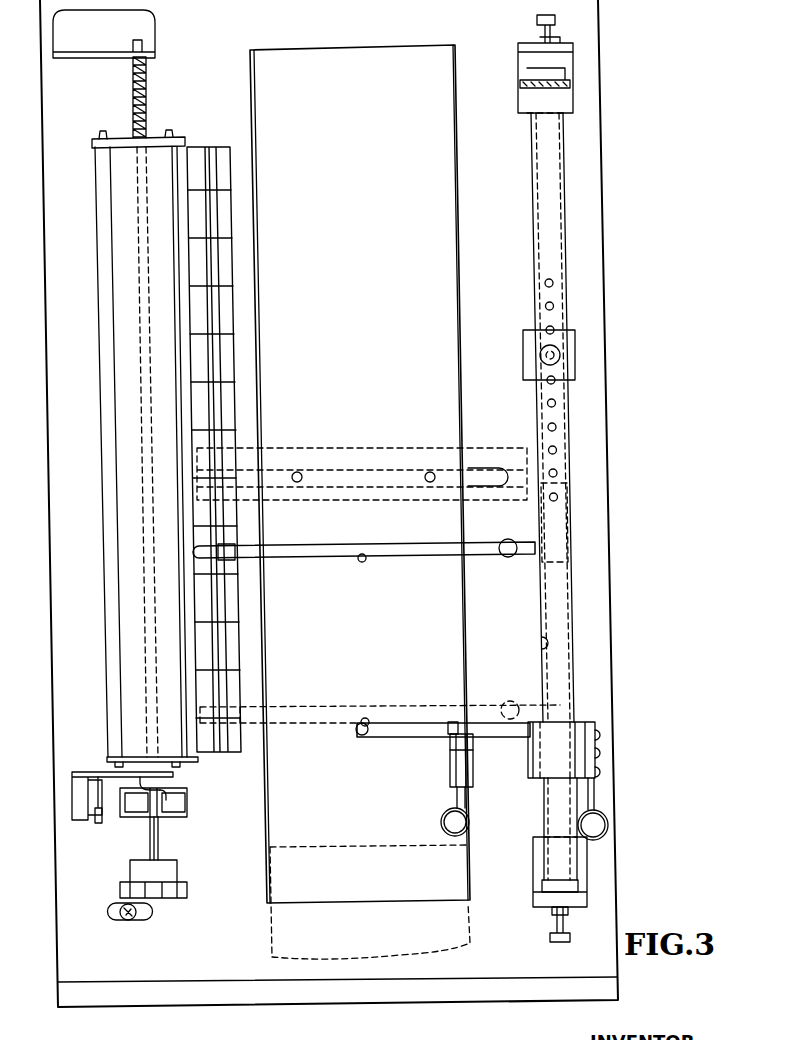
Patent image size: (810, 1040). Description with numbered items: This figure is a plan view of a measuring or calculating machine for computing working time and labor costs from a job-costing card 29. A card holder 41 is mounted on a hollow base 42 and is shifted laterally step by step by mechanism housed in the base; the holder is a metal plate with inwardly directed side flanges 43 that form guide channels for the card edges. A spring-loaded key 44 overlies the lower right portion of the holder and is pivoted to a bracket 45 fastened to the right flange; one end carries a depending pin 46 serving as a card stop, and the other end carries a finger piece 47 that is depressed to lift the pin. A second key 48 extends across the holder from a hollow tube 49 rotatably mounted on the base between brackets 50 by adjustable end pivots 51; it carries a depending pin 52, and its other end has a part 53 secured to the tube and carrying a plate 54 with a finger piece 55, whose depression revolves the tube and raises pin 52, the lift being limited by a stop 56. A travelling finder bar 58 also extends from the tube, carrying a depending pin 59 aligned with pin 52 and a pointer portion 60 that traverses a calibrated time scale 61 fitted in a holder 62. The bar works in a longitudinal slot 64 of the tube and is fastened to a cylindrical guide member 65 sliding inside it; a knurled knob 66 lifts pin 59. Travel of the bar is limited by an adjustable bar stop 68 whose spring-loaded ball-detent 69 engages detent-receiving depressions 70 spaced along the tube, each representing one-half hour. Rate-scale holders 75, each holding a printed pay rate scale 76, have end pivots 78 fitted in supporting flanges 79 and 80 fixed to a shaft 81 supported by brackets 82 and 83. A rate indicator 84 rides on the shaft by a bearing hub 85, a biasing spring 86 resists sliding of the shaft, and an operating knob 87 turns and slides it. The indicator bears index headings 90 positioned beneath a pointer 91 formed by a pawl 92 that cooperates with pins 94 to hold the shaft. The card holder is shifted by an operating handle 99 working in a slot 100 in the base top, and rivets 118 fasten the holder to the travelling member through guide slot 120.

The job-costing card 29 is at (268, 940).
The card holder 41 is at (412, 246).
The hollow base 42 is at (605, 193).
The side flanges 43 is at (258, 333).
The spring-loaded key 44 is at (457, 797).
The bracket 45 is at (468, 755).
The depending pin 46 is at (452, 720).
The finger piece 47 is at (452, 768).
The second key 48 is at (417, 722).
The tube 49 is at (555, 617).
The brackets 50 is at (535, 45).
The end pivots 51 is at (545, 60).
The depending pin 52 is at (358, 733).
The part 53 is at (570, 720).
The plate 54 is at (600, 741).
The finger piece 55 is at (607, 822).
The stop 56 is at (600, 758).
The travelling finder bar 58 is at (428, 542).
The depending pin 59 is at (362, 553).
The pointer portion 60 is at (228, 547).
The time scale 61 is at (224, 585).
The holder 62 is at (234, 167).
The longitudinal slot 64 is at (540, 647).
The cylindrical guide member 65 is at (560, 564).
The knurled knob 66 is at (508, 558).
The adjustable bar stop 68 is at (527, 352).
The spring-loaded ball-detent 69 is at (557, 352).
The detent-receiving depressions 70 is at (554, 330).
The rate-scale holders 75 is at (157, 163).
The pay rate scale 76 is at (196, 218).
The end pivots 78 is at (104, 131).
The supporting flange 79 is at (92, 143).
The supporting flange 80 is at (110, 762).
The shaft 81 is at (140, 397).
The bracket 82 is at (97, 61).
The bracket 83 is at (82, 822).
The rate indicator 84 is at (178, 818).
The bearing hub 85 is at (178, 783).
The biasing spring 86 is at (146, 87).
The operating knob 87 is at (188, 889).
The index headings 90 is at (188, 812).
The pointer 91 is at (160, 823).
The pawl 92 is at (110, 826).
The pins 94 is at (186, 800).
The operating handle 99 is at (130, 921).
The slot 100 is at (152, 910).
The rivets 118 is at (297, 471).
The guide slot 120 is at (492, 465).